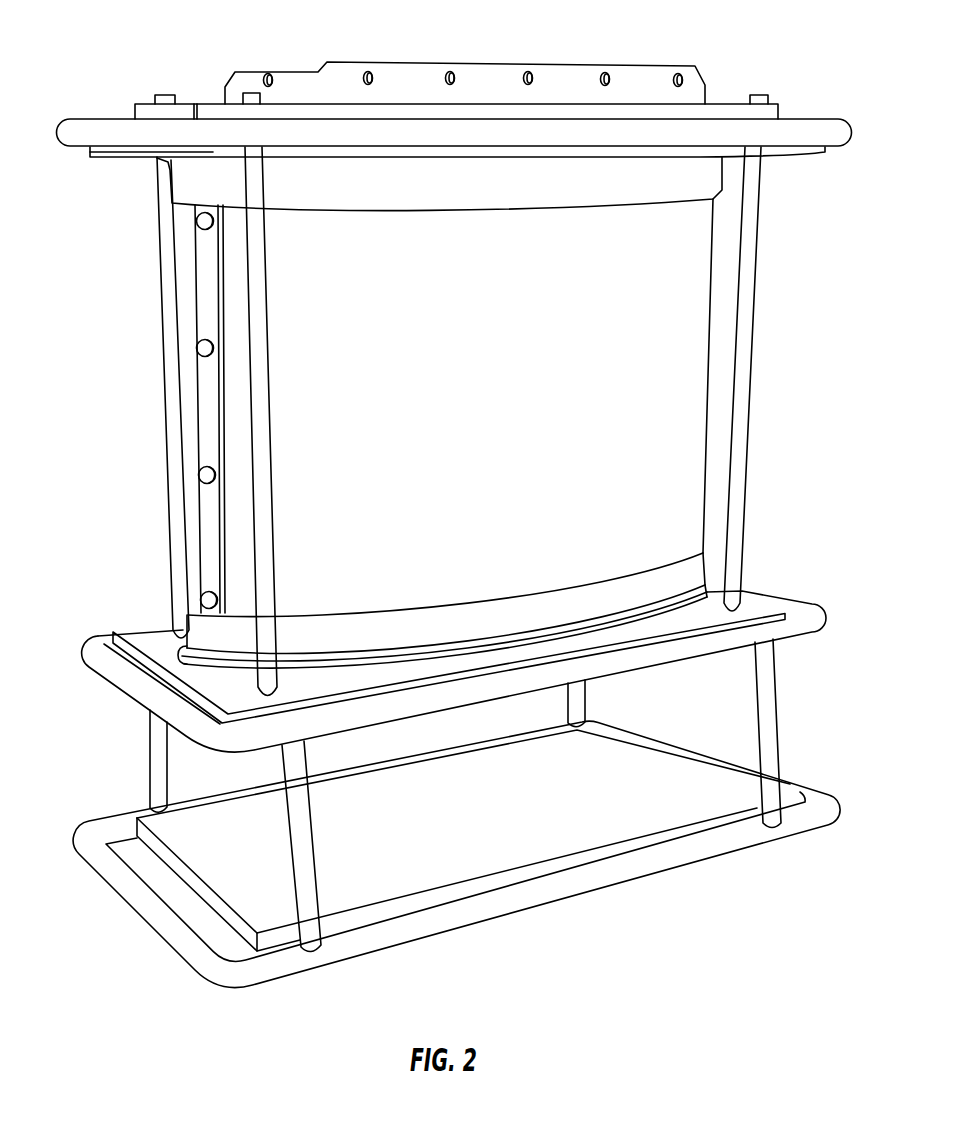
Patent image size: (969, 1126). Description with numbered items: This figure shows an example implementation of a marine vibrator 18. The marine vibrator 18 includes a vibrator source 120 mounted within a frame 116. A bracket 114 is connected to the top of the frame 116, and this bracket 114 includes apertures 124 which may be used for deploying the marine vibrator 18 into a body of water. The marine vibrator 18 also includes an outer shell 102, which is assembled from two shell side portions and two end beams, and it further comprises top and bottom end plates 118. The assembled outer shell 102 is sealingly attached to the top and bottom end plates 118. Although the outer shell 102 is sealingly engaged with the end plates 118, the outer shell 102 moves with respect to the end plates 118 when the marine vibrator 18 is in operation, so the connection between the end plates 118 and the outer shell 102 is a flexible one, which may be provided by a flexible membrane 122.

The marine vibrator 18 is at (771, 357).
The outer shell 102 is at (668, 477).
The bracket 114 is at (660, 76).
The frame 116 is at (117, 678).
The top and bottom end plates 118 is at (785, 157).
The vibrator source 120 is at (702, 263).
The flexible membrane 122 is at (183, 668).
The apertures 124 is at (605, 73).